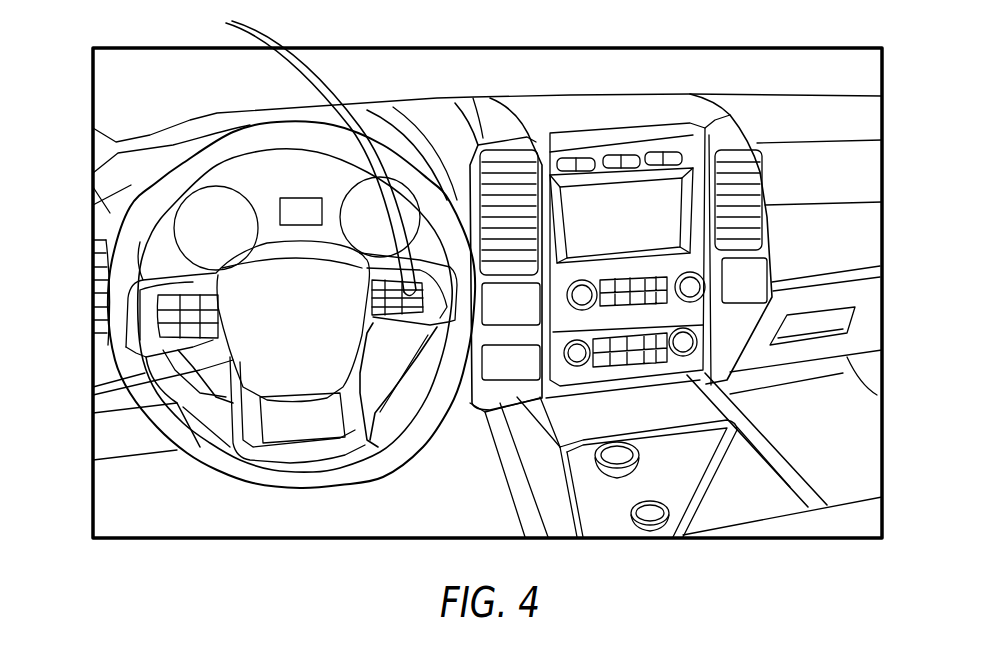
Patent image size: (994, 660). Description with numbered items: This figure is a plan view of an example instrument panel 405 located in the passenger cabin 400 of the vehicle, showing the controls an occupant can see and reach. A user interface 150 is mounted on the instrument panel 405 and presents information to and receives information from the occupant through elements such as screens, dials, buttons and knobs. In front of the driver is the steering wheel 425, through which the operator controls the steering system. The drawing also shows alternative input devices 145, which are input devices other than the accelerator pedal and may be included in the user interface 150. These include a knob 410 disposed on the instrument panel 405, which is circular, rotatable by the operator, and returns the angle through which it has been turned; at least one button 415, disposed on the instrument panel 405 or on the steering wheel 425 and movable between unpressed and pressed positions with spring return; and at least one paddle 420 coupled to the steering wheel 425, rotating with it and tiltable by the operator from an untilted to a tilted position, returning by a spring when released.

The alternative input devices 145 is at (75, 185).
The user interface 150 is at (615, 118).
The passenger cabin 400 is at (896, 362).
The instrument panel 405 is at (762, 118).
The knob 410 is at (618, 443).
The button 415 is at (228, 22).
The paddle 420 is at (178, 372).
The steering wheel 425 is at (208, 448).